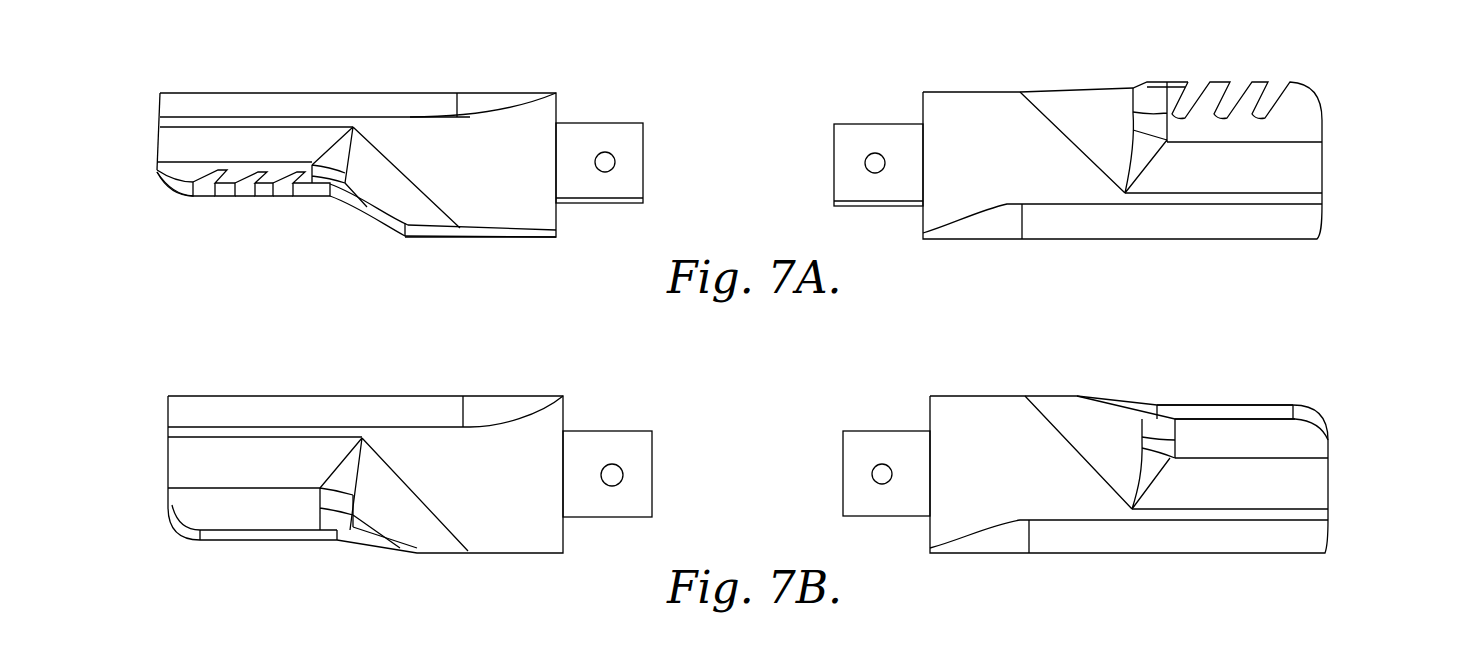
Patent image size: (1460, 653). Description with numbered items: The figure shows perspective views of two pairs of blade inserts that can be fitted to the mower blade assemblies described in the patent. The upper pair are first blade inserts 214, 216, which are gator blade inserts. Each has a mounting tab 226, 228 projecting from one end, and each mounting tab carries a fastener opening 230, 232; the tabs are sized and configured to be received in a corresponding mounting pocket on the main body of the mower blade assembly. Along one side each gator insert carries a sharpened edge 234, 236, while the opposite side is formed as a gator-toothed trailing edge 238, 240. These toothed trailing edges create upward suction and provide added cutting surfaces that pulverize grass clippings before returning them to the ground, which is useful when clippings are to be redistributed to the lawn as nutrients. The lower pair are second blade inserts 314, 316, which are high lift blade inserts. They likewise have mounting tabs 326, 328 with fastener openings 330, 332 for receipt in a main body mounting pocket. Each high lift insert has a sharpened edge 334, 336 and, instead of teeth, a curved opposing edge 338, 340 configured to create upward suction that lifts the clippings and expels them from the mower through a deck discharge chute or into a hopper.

In FIG. 7A, the blade insert 214 is at (1170, 163).
In FIG. 7A, the blade insert 216 is at (312, 146).
In FIG. 7A, the mounting tab 226 is at (845, 135).
In FIG. 7A, the mounting tab 228 is at (637, 141).
In FIG. 7A, the fastener opening 230 is at (868, 160).
In FIG. 7A, the fastener opening 232 is at (610, 168).
In FIG. 7A, the sharpened edge 234 is at (1195, 228).
In FIG. 7A, the sharpened edge 236 is at (273, 103).
In FIG. 7A, the gator-toothed trailing edge 238 is at (1240, 88).
In FIG. 7A, the gator-toothed trailing edge 240 is at (240, 188).
In FIG. 7B, the blade insert 314 is at (1179, 473).
In FIG. 7B, the blade insert 316 is at (306, 462).
In FIG. 7B, the mounting tab 326 is at (855, 445).
In FIG. 7B, the mounting tab 328 is at (645, 446).
In FIG. 7B, the fastener opening 330 is at (877, 472).
In FIG. 7B, the fastener opening 332 is at (620, 475).
In FIG. 7B, the sharpened edge 334 is at (1200, 540).
In FIG. 7B, the sharpened edge 336 is at (305, 410).
In FIG. 7B, the curved opposing edge 338 is at (1240, 425).
In FIG. 7B, the curved opposing edge 340 is at (243, 518).